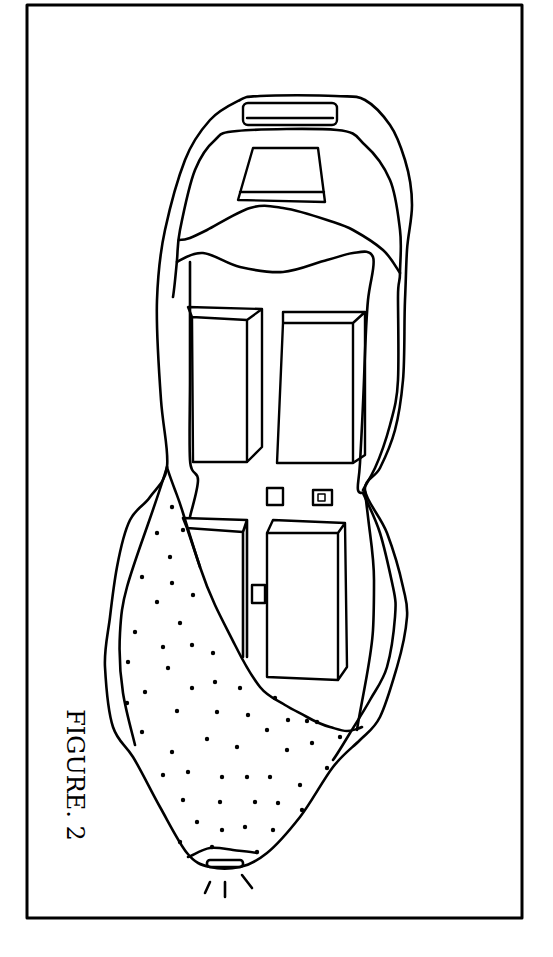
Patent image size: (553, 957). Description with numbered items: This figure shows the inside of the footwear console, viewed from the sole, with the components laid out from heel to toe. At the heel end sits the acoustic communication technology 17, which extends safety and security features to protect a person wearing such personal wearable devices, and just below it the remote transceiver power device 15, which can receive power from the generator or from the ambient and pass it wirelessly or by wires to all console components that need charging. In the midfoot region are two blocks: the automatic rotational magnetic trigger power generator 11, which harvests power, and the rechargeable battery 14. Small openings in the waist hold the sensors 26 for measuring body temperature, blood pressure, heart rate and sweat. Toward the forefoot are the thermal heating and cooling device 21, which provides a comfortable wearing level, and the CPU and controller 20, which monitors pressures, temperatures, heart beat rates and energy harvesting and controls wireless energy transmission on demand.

The automatic rotational magnetic trigger power generator 11 is at (332, 387).
The rechargeable battery 14 is at (223, 383).
The remote transceiver power device 15 is at (270, 173).
The acoustic communication technology 17 is at (300, 108).
The CPU and controller 20 is at (197, 582).
The thermal heating and cooling device 21 is at (310, 605).
The sensors 26 is at (327, 500).